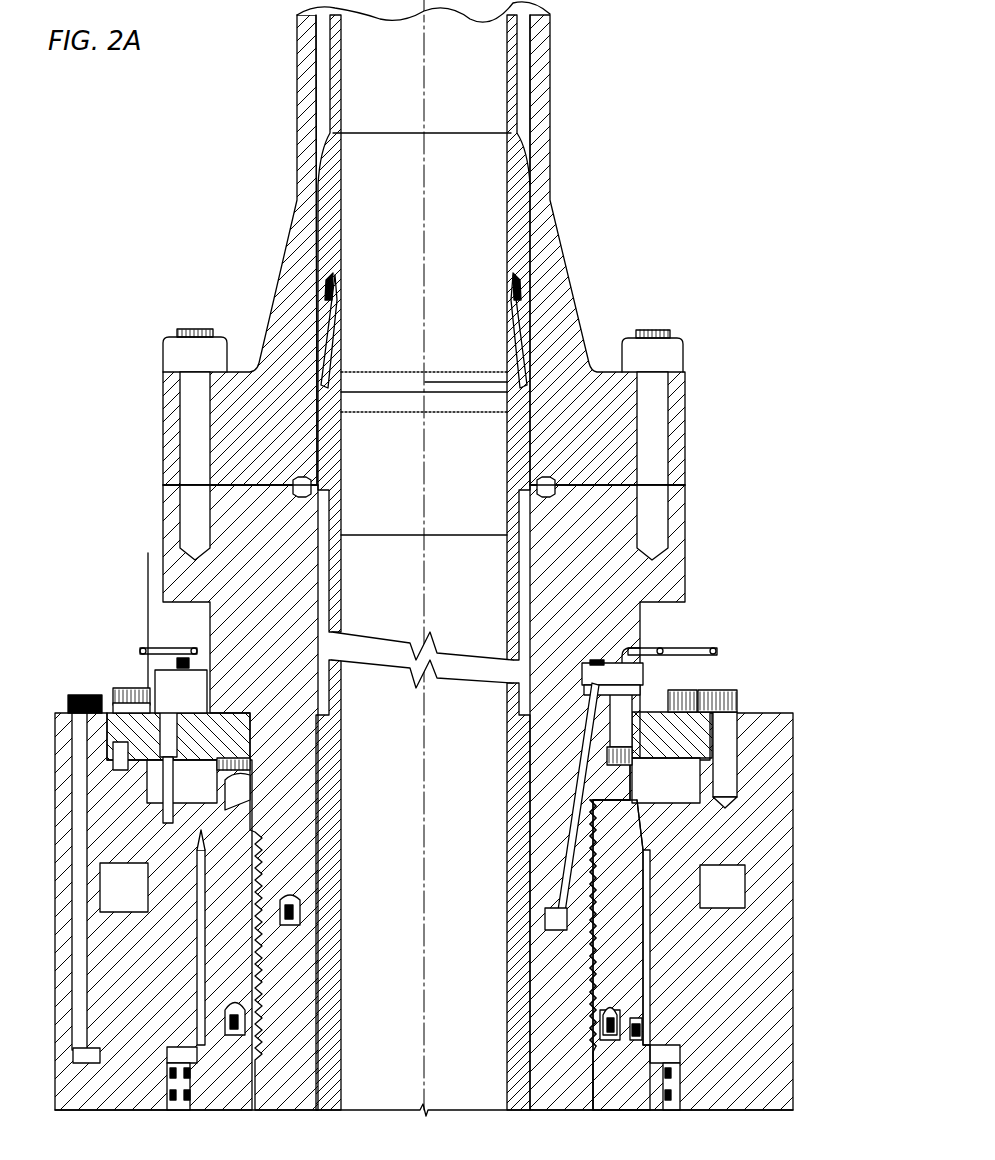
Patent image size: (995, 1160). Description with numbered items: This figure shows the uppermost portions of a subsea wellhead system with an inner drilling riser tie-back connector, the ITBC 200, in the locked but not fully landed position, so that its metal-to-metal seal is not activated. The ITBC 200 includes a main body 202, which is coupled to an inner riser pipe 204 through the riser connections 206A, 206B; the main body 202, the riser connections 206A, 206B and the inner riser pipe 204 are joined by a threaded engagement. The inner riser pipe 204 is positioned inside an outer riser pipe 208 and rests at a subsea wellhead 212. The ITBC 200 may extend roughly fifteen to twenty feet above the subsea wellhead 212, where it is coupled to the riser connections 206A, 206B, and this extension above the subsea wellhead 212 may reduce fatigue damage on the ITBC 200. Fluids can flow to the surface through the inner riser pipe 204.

The ITBC 200 is at (518, 718).
The main body 202 is at (540, 1070).
The inner riser pipe 204 is at (515, 86).
The riser connection 206A is at (528, 200).
The riser connection 206B is at (527, 325).
The outer riser pipe 208 is at (550, 137).
The subsea wellhead 212 is at (560, 1013).